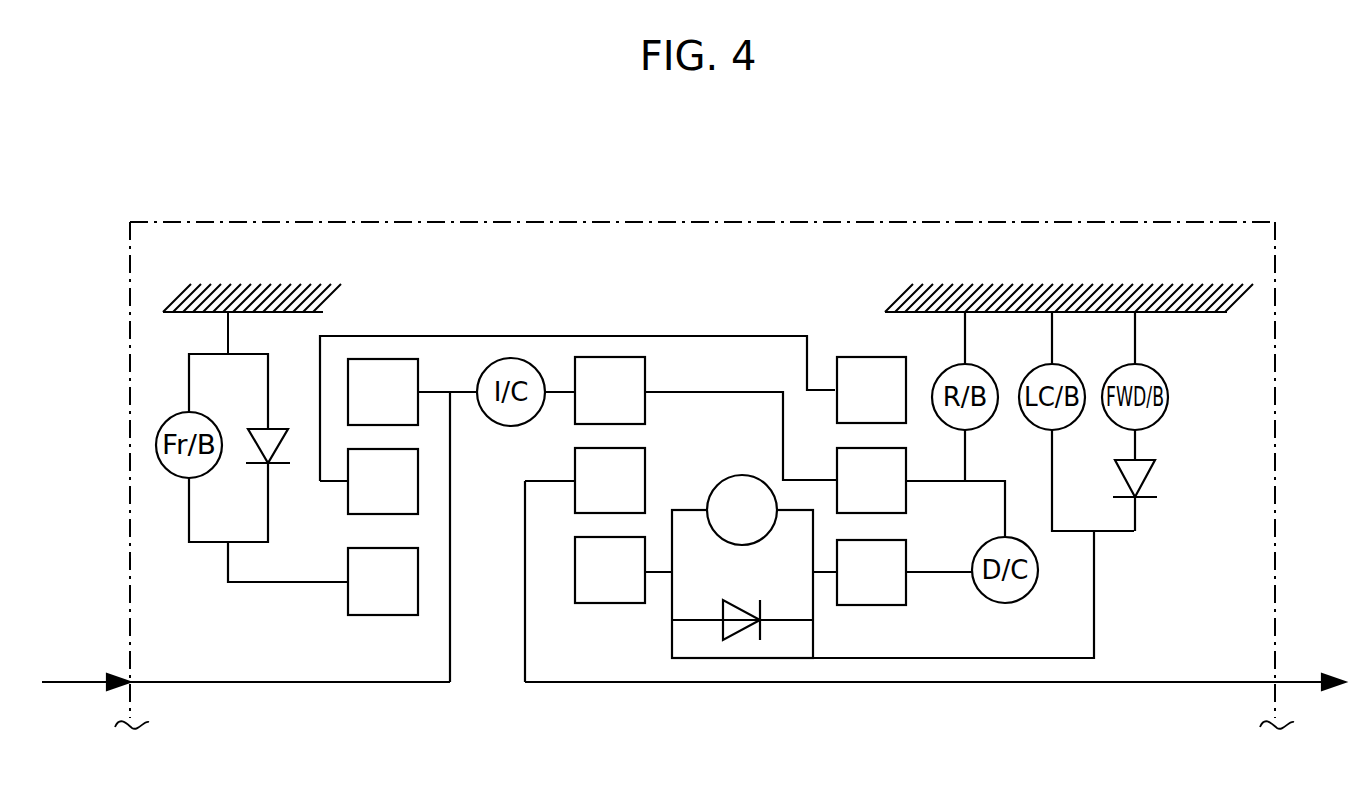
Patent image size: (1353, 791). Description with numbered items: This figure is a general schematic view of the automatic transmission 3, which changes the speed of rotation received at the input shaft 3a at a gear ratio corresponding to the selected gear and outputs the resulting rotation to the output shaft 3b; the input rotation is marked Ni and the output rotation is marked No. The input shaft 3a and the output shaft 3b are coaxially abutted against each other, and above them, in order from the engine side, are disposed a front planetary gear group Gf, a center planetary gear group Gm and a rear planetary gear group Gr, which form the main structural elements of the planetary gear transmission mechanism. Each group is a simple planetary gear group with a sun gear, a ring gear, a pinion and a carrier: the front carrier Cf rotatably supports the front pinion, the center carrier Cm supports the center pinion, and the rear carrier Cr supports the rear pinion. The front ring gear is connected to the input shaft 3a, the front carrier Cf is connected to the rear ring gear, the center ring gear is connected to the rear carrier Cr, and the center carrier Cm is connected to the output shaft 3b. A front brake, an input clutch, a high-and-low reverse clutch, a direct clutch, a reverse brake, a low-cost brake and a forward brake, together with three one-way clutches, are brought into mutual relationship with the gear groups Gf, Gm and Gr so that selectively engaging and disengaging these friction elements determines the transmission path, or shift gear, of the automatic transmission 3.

The automatic transmission 3 is at (743, 210).
The input shaft 3a is at (62, 686).
The output shaft 3b is at (1315, 686).
The front planetary gear group Gf is at (353, 437).
The center planetary gear group Gm is at (564, 430).
The rear planetary gear group Gr is at (851, 430).
The front carrier Cf is at (338, 480).
The center carrier Cm is at (556, 480).
The rear carrier Cr is at (805, 480).
The input rotation speed Ni is at (290, 665).
The output rotation speed No is at (900, 662).